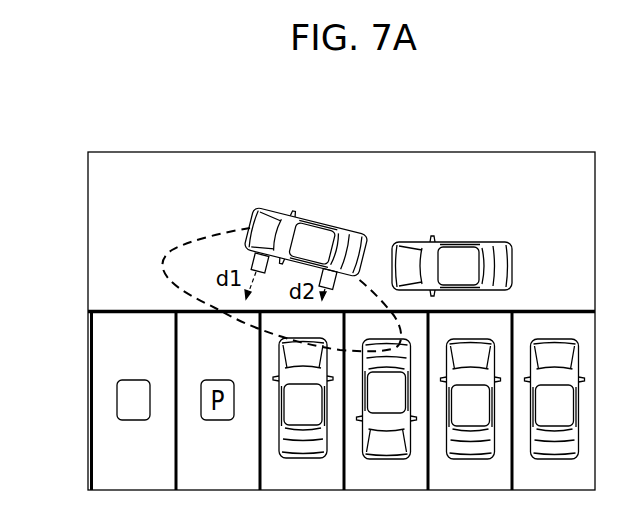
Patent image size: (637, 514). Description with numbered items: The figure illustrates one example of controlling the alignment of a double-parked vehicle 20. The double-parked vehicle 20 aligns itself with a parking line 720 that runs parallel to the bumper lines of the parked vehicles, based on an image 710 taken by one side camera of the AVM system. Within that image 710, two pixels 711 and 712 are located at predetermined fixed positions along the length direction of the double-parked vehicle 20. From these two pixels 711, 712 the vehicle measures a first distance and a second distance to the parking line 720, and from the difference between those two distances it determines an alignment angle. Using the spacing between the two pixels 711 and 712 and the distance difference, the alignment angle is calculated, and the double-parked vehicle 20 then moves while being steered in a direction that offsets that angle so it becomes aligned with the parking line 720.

The double-parked vehicle 20 is at (313, 222).
The image 710 is at (165, 258).
The pixel 711 is at (245, 250).
The pixel 712 is at (330, 270).
The parking line 720 is at (137, 313).